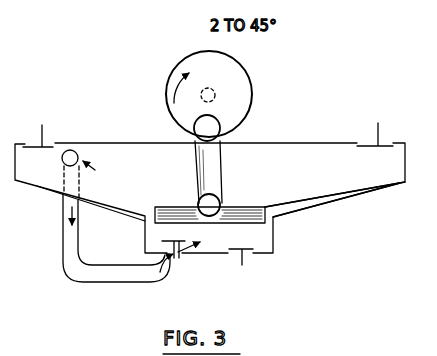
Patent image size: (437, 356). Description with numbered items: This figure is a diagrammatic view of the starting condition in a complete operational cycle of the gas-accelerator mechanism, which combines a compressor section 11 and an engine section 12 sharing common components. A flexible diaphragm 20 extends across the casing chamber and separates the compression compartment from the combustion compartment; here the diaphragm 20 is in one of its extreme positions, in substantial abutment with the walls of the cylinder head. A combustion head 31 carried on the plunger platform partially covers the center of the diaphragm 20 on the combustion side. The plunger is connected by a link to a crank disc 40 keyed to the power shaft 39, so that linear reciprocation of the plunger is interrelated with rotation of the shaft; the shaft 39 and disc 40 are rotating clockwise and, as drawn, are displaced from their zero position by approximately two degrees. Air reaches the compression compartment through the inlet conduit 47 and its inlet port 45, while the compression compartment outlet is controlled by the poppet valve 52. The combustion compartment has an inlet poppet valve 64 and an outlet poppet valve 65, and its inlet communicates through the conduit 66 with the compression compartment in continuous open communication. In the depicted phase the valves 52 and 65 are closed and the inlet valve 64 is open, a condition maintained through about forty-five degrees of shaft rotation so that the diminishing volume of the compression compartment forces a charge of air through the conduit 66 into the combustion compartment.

The compressor section 11 is at (378, 172).
The engine section 12 is at (293, 208).
The diaphragm 20 is at (303, 197).
The combustion head 31 is at (173, 208).
The power shaft 39 is at (215, 97).
The crank disc 40 is at (250, 79).
The inlet port 45 is at (42, 133).
The inlet conduit 47 is at (223, 170).
The poppet valve 52 is at (378, 130).
The inlet poppet valve 64 is at (181, 257).
The outlet poppet valve 65 is at (242, 258).
The conduit 66 is at (63, 258).